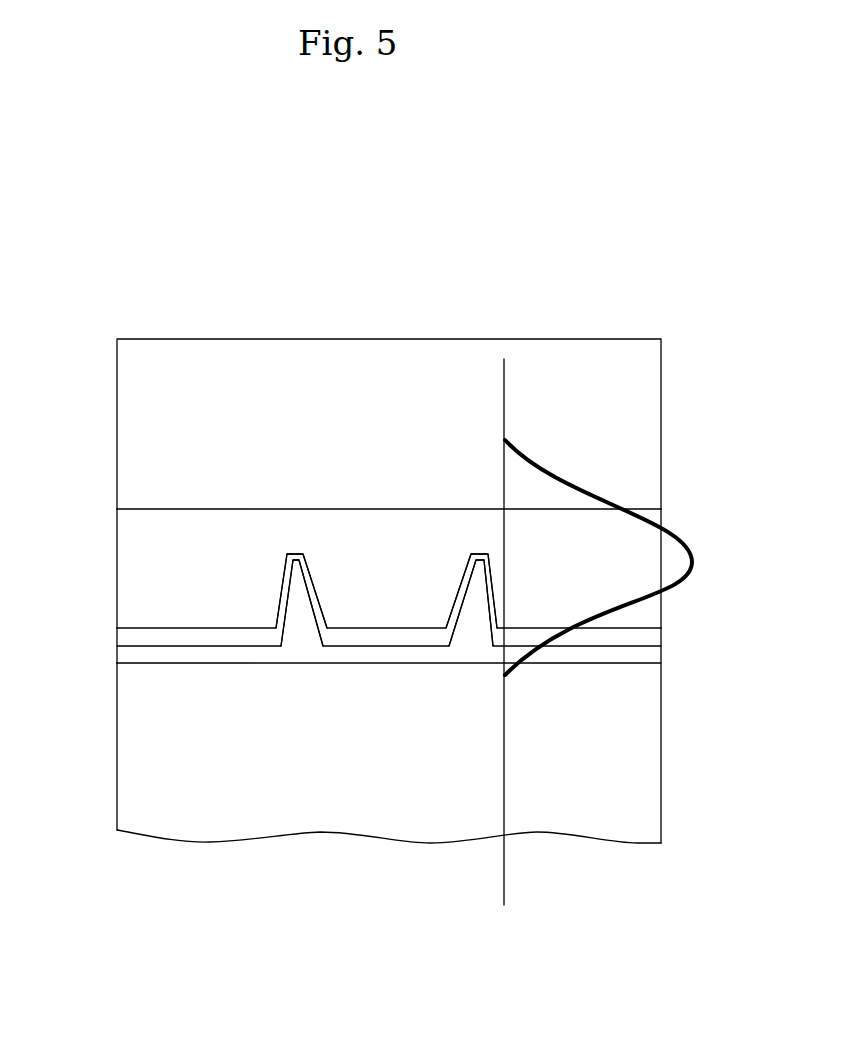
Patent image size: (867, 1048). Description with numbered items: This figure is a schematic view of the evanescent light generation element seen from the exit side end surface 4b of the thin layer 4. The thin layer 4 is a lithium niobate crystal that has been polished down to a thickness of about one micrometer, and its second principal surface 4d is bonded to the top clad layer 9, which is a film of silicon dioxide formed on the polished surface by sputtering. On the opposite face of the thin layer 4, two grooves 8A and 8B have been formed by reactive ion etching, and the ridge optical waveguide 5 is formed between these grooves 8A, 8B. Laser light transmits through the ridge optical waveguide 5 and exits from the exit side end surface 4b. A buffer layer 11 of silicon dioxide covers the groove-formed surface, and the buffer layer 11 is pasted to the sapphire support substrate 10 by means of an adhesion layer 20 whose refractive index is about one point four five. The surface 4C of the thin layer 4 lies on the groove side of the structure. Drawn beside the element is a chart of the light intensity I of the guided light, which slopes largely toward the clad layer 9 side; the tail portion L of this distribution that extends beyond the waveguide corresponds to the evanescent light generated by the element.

The clad layer 9 is at (643, 420).
The second principal surface 4d is at (373, 507).
The thin layer 4 is at (652, 522).
The exit side end surface 4b is at (615, 582).
The ridge optical waveguide 5 is at (401, 625).
The groove 8B is at (280, 608).
The groove 8A is at (460, 608).
The sub-layer 4C is at (212, 630).
The adhesion layer 20 is at (128, 654).
The buffer layer 11 is at (172, 637).
The support substrate 10 is at (643, 817).
The hatched portion L is at (525, 495).
The light intensity I is at (670, 588).